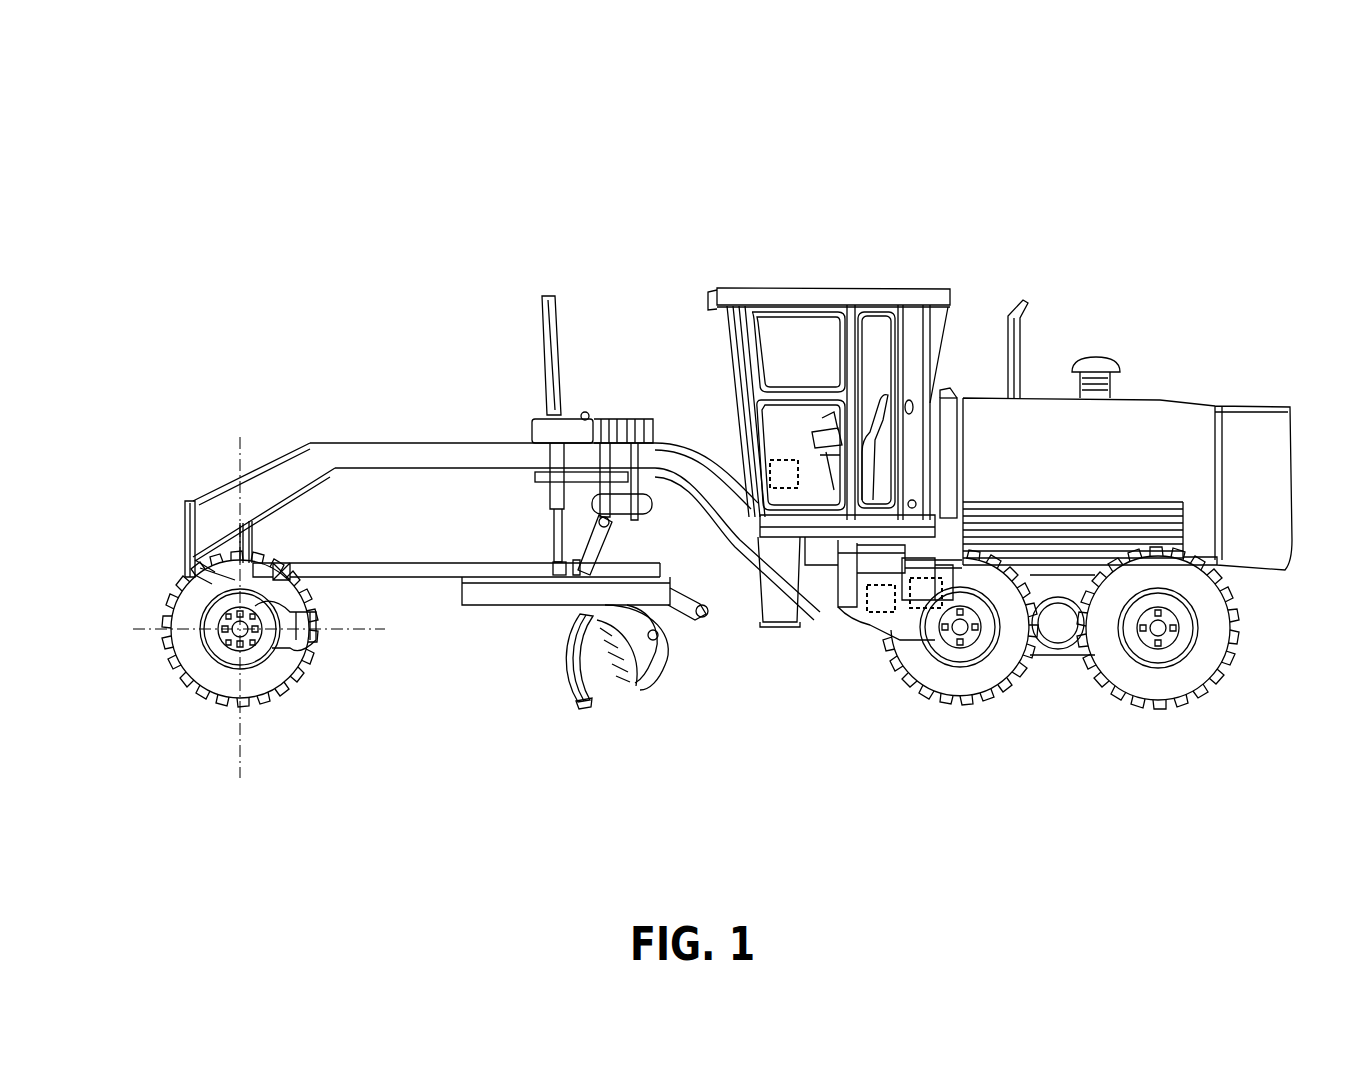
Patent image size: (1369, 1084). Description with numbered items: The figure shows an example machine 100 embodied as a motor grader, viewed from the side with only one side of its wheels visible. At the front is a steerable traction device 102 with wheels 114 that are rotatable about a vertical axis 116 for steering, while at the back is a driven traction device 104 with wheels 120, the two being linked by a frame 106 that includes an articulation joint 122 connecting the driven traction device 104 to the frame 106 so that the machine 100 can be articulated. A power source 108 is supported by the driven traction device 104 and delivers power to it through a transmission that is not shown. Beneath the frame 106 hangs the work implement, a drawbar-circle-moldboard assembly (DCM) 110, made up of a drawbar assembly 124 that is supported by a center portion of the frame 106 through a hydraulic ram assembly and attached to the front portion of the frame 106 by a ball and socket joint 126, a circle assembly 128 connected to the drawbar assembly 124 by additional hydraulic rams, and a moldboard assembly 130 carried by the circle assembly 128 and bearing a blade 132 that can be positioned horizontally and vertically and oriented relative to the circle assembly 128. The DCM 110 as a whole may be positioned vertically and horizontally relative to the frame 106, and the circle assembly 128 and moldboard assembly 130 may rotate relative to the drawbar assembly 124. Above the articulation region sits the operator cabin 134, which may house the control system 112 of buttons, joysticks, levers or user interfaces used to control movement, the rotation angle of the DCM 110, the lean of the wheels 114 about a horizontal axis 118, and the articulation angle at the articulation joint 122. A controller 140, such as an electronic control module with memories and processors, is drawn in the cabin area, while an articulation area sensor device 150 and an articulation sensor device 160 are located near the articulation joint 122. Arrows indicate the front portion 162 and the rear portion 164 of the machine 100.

The machine 100 is at (188, 64).
The steerable traction device 102 is at (170, 702).
The driven traction device 104 is at (1220, 708).
The frame 106 is at (430, 450).
The power source 108 is at (1048, 370).
The drawbar-circle-moldboard assembly (DCM) 110 is at (450, 690).
The control system 112 is at (815, 418).
The wheels 114 is at (282, 694).
The vertical axis 116 is at (245, 742).
The horizontal axis 118 is at (340, 630).
The wheels 120 is at (1112, 697).
The articulation joint 122 is at (858, 648).
The drawbar assembly 124 is at (432, 575).
The ball and socket joint 126 is at (287, 556).
The circle assembly 128 is at (513, 600).
The moldboard assembly 130 is at (560, 688).
The blade 132 is at (590, 702).
The operator cabin 134 is at (818, 262).
The controller 140 is at (782, 468).
The articulation area sensor device 150 is at (880, 598).
The articulation sensor device 160 is at (918, 608).
The front portion 162 is at (202, 438).
The rear portion 164 is at (1224, 382).